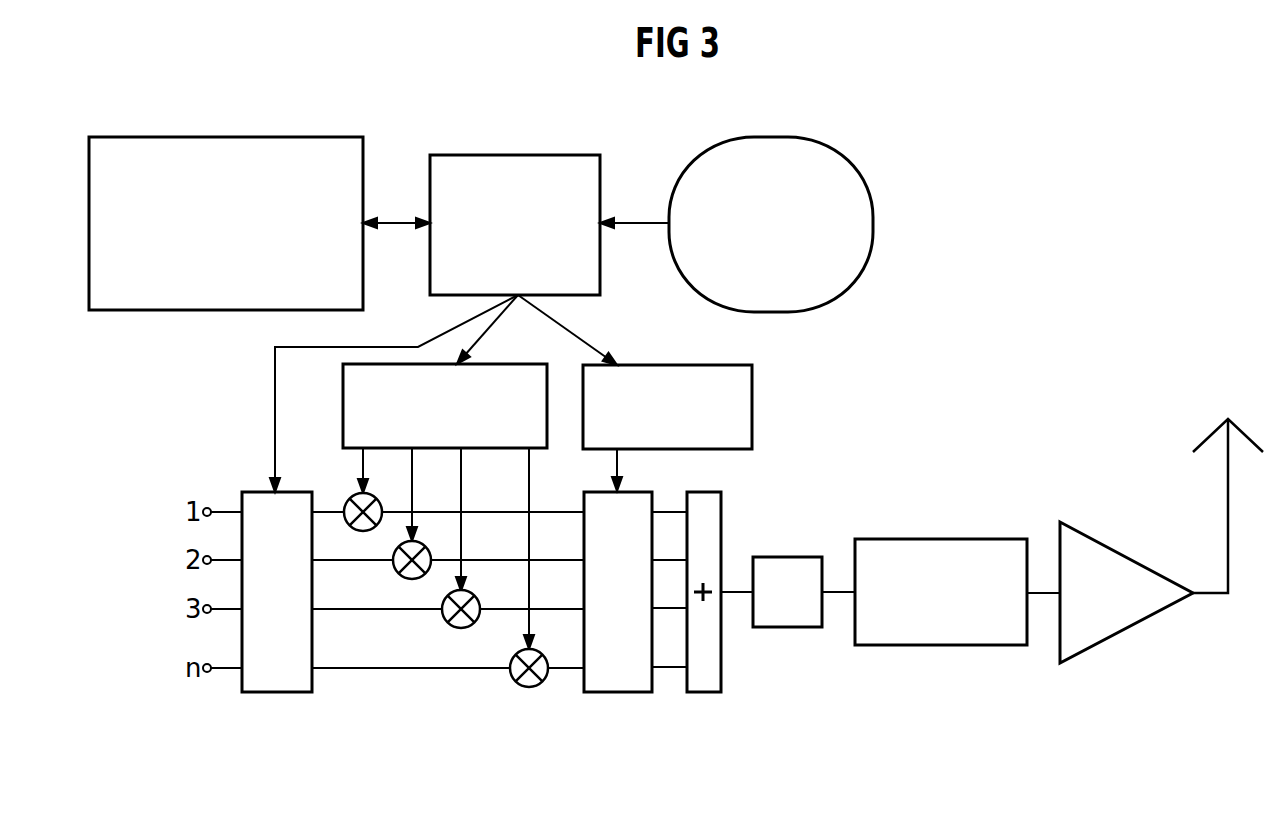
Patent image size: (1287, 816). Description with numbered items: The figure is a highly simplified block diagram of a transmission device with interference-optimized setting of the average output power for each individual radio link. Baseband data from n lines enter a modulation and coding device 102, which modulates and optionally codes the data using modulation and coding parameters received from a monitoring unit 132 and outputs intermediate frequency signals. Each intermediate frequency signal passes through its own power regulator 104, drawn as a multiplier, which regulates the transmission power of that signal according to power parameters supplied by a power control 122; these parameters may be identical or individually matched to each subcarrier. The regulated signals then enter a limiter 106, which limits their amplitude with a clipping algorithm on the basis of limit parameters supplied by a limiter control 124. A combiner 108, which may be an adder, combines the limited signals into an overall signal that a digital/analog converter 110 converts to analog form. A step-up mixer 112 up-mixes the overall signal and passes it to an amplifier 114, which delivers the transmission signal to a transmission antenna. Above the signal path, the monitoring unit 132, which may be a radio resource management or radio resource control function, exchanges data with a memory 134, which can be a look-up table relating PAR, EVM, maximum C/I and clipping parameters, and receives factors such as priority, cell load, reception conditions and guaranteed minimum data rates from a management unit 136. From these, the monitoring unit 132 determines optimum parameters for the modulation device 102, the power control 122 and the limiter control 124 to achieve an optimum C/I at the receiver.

The modulation and coding device 102 is at (277, 692).
The power regulator 104 is at (350, 497).
The limiter 106 is at (618, 692).
The combiner 108 is at (704, 692).
The digital/analog converter 110 is at (788, 557).
The step-up mixer 112 is at (940, 539).
The amplifier 114 is at (1112, 545).
The power control 122 is at (466, 421).
The limiter control 124 is at (688, 421).
The monitoring unit 132 is at (514, 155).
The memory 134 is at (226, 137).
The management unit 136 is at (772, 137).